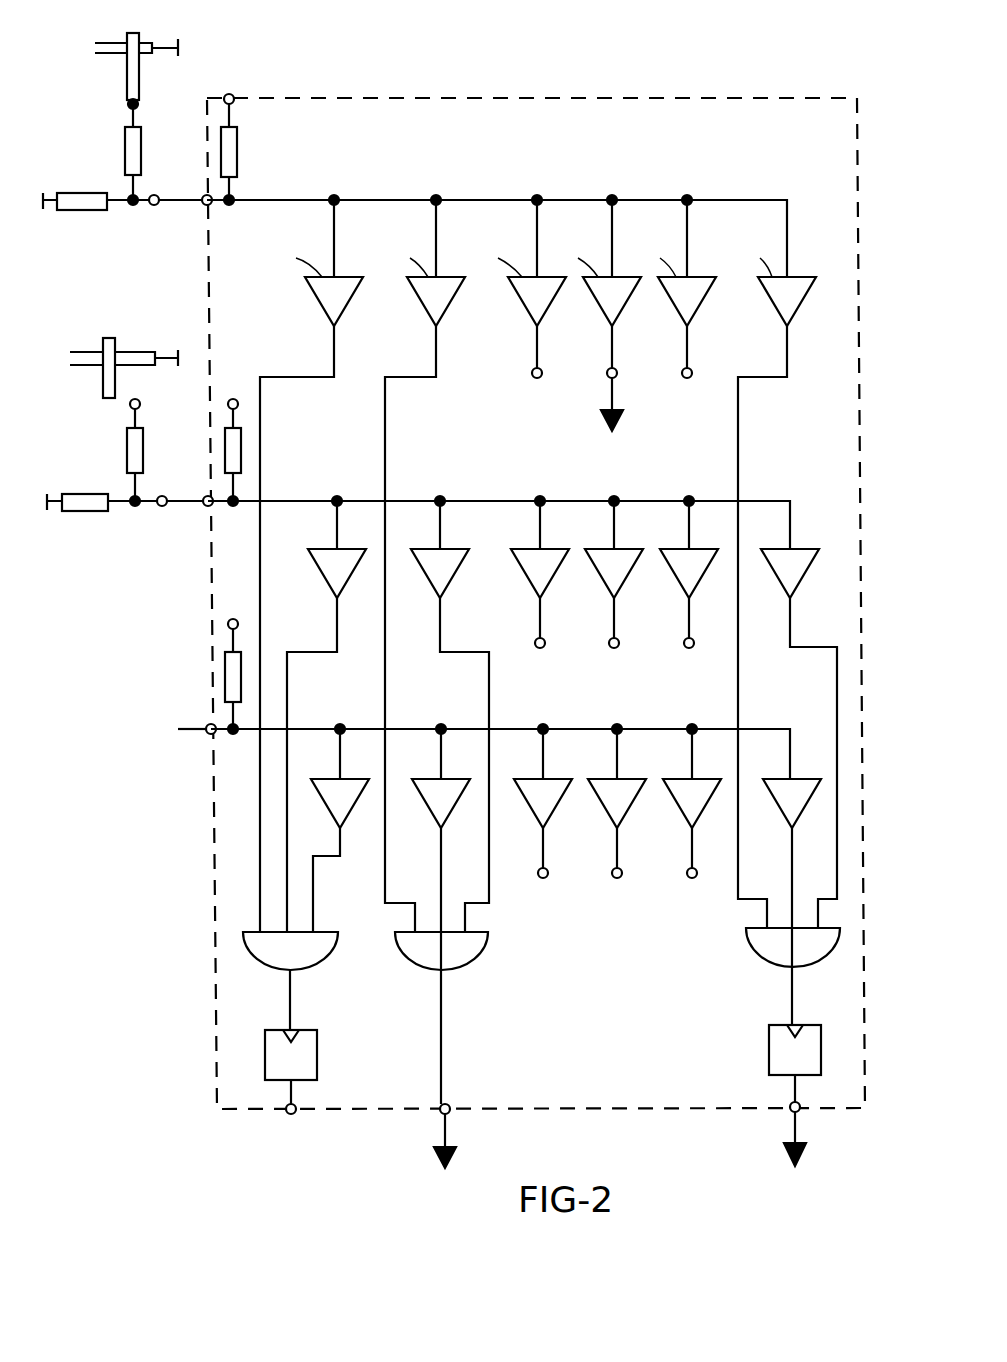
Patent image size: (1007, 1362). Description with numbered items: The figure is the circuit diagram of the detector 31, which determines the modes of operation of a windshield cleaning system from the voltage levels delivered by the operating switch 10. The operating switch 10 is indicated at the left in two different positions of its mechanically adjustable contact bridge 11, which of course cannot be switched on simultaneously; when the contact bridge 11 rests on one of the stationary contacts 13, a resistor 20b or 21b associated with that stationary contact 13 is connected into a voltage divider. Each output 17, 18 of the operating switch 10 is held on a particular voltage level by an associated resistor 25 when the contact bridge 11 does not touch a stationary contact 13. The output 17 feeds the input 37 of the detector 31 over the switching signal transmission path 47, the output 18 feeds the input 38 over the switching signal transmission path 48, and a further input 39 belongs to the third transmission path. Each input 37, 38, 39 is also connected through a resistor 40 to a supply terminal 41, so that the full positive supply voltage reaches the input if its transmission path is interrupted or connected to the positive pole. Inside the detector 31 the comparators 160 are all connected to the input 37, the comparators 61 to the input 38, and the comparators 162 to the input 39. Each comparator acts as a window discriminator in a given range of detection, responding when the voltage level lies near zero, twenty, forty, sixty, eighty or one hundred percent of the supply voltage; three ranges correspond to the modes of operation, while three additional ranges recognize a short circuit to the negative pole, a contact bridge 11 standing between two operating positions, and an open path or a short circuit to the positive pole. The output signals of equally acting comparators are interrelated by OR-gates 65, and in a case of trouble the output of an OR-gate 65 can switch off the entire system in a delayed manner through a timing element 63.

The operating switch 10 is at (144, 207).
The contact bridge 11 is at (139, 72).
The stationary contact 13 is at (139, 104).
The output 17 is at (154, 206).
The output 18 is at (161, 507).
The resistor 20b is at (125, 150).
The resistor 21b is at (139, 462).
The resistor 25 is at (75, 213).
The detector 31 is at (532, 98).
The input 37 is at (204, 197).
The input 38 is at (210, 507).
The input 39 is at (178, 729).
The resistor 40 is at (240, 152).
The supply terminal 41 is at (233, 360).
The switching signal transmission path 47 is at (177, 204).
The conductor 48 is at (178, 505).
The comparators 61 is at (830, 581).
The timing element 63 is at (317, 1065).
The OR-gate 65 is at (322, 945).
The buffer row 160 is at (890, 323).
The buffer row 162 is at (895, 805).